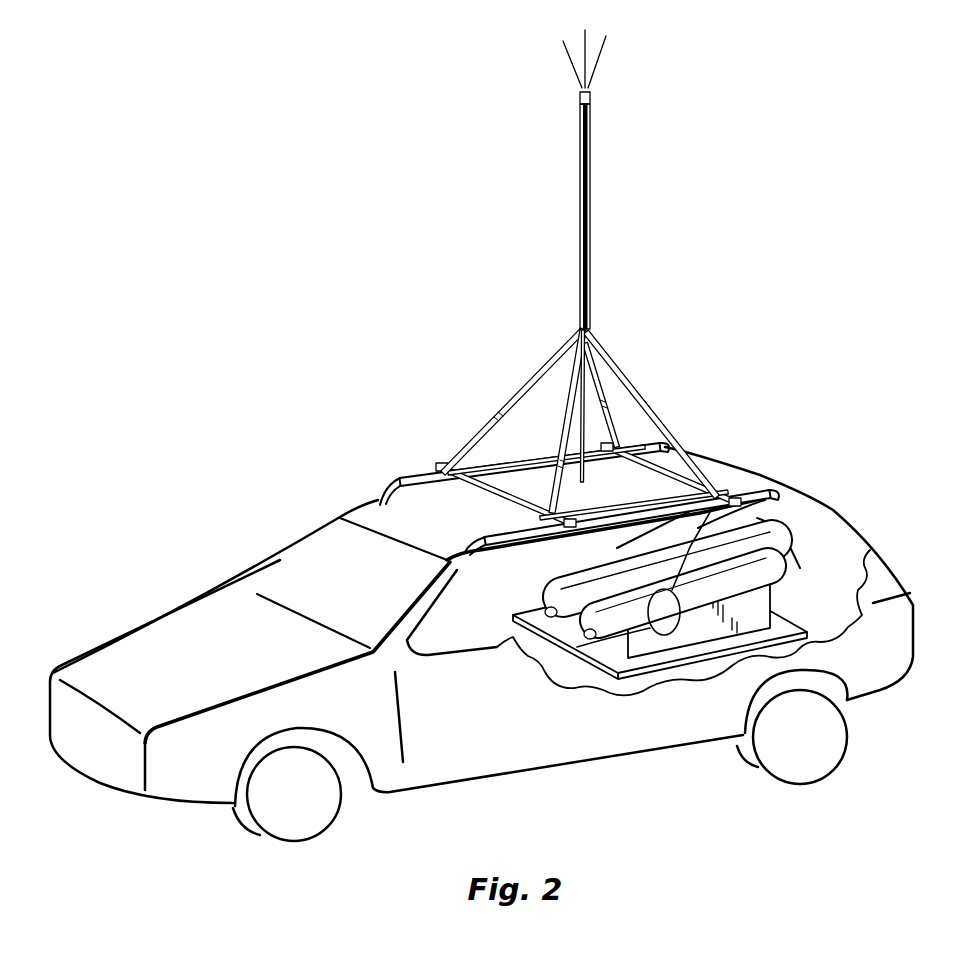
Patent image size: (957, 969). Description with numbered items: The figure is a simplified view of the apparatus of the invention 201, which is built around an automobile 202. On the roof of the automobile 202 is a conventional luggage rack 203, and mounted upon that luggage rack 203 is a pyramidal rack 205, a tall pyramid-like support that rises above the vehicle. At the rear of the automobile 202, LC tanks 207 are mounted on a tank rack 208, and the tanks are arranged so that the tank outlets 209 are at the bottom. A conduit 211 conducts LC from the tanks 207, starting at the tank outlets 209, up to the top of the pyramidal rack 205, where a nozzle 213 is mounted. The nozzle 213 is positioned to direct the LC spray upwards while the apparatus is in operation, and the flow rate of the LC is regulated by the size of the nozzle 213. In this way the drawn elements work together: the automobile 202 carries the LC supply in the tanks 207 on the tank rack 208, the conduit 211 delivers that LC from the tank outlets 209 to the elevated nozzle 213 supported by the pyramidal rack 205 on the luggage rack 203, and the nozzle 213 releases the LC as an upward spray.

The apparatus of the invention 201 is at (647, 272).
The automobile 202 is at (518, 742).
The luggage rack 203 is at (395, 480).
The pyramidal rack 205 is at (510, 402).
The LC tanks 207 is at (790, 535).
The tank rack 208 is at (777, 595).
The tank outlets 209 is at (577, 647).
The conduit 211 is at (757, 480).
The nozzle 213 is at (593, 96).